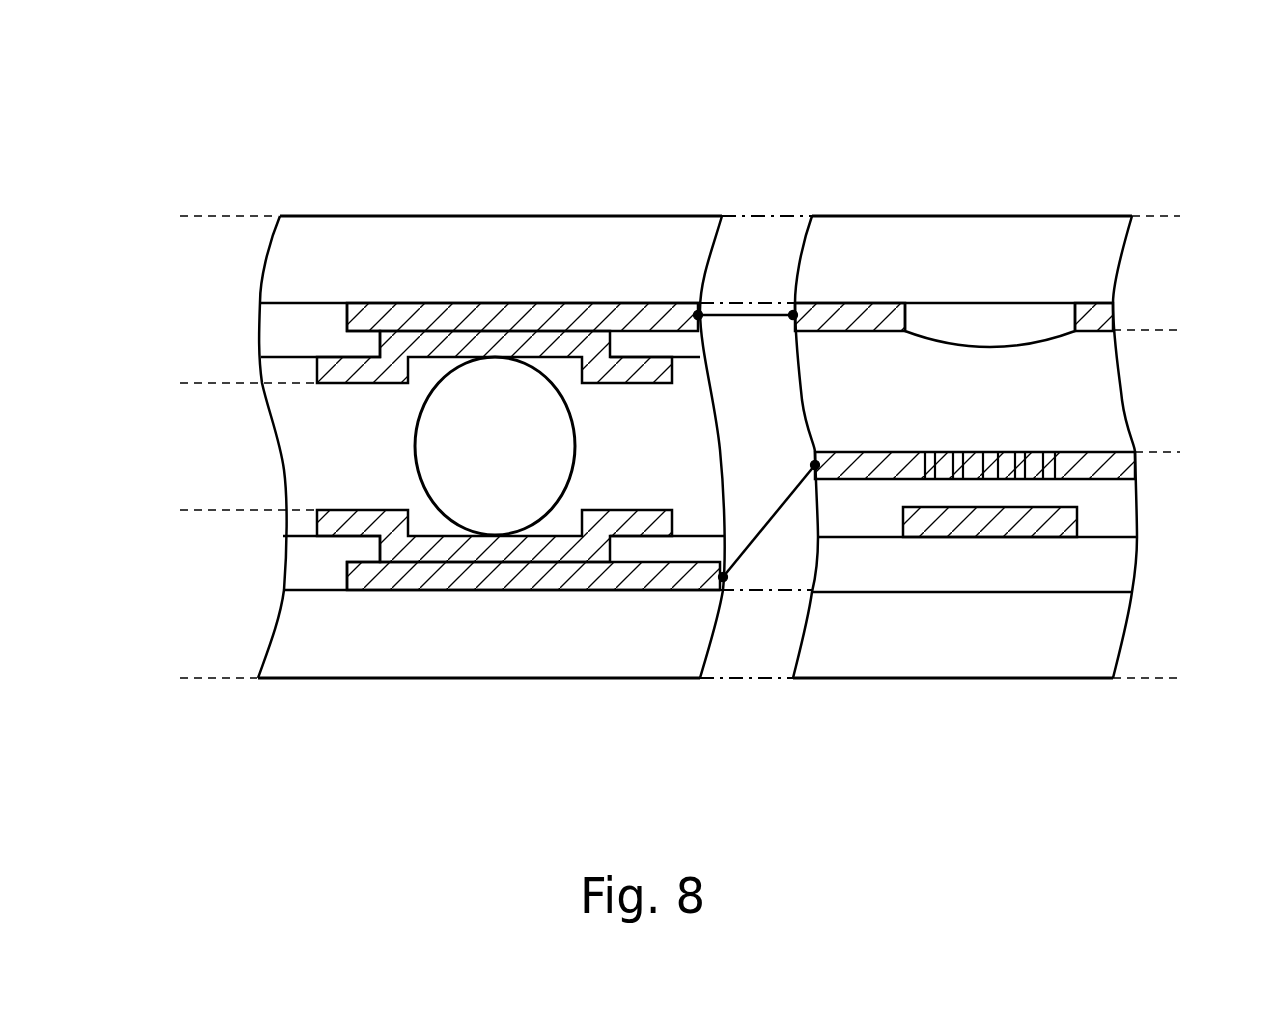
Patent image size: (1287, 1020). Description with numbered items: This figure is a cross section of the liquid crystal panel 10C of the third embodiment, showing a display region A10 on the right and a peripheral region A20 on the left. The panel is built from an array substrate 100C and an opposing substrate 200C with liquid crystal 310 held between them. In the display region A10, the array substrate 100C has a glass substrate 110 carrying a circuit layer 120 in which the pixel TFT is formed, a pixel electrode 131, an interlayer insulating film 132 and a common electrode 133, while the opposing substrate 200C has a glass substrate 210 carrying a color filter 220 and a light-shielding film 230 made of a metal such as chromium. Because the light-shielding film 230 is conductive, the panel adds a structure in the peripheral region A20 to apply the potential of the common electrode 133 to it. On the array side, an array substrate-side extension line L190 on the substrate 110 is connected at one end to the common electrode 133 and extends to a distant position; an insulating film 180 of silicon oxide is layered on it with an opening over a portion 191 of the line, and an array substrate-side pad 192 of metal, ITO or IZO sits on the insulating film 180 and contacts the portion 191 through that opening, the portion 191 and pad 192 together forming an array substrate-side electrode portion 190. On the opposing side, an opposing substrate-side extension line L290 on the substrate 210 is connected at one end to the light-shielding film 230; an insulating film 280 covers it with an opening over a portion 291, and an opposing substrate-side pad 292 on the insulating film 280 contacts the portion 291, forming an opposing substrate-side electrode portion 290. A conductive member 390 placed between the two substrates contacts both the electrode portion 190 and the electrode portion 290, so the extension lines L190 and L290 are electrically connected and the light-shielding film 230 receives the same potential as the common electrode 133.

The liquid crystal panel 10C is at (225, 170).
The peripheral region A20 is at (273, 80).
The display region A10 is at (1090, 80).
The substrate 210 is at (683, 237).
The substrate 110 is at (677, 662).
The insulating film 280 is at (310, 325).
The opposing substrate-side electrode portion 290 is at (400, 163).
The portion of the opposing substrate-side extension line 291 is at (440, 315).
The opposing substrate-side pad 292 is at (506, 347).
The opposing substrate-side extension line L290 is at (632, 317).
The conductive member 390 is at (450, 457).
The insulating film 180 is at (321, 580).
The array substrate-side electrode portion 190 is at (523, 737).
The portion of the array substrate-side extension line 191 is at (420, 580).
The array substrate-side pad 192 is at (500, 552).
The array substrate-side extension line L190 is at (633, 578).
The opposing substrate 200C is at (226, 216).
The array substrate 100C is at (226, 510).
The light-shielding film 230 is at (870, 315).
The color filter 220 is at (1000, 318).
The liquid crystal 310 is at (1075, 397).
The common electrode 133 is at (872, 468).
The interlayer insulating film 132 is at (1100, 520).
The pixel electrode 131 is at (960, 525).
The circuit layer 120 is at (1020, 577).